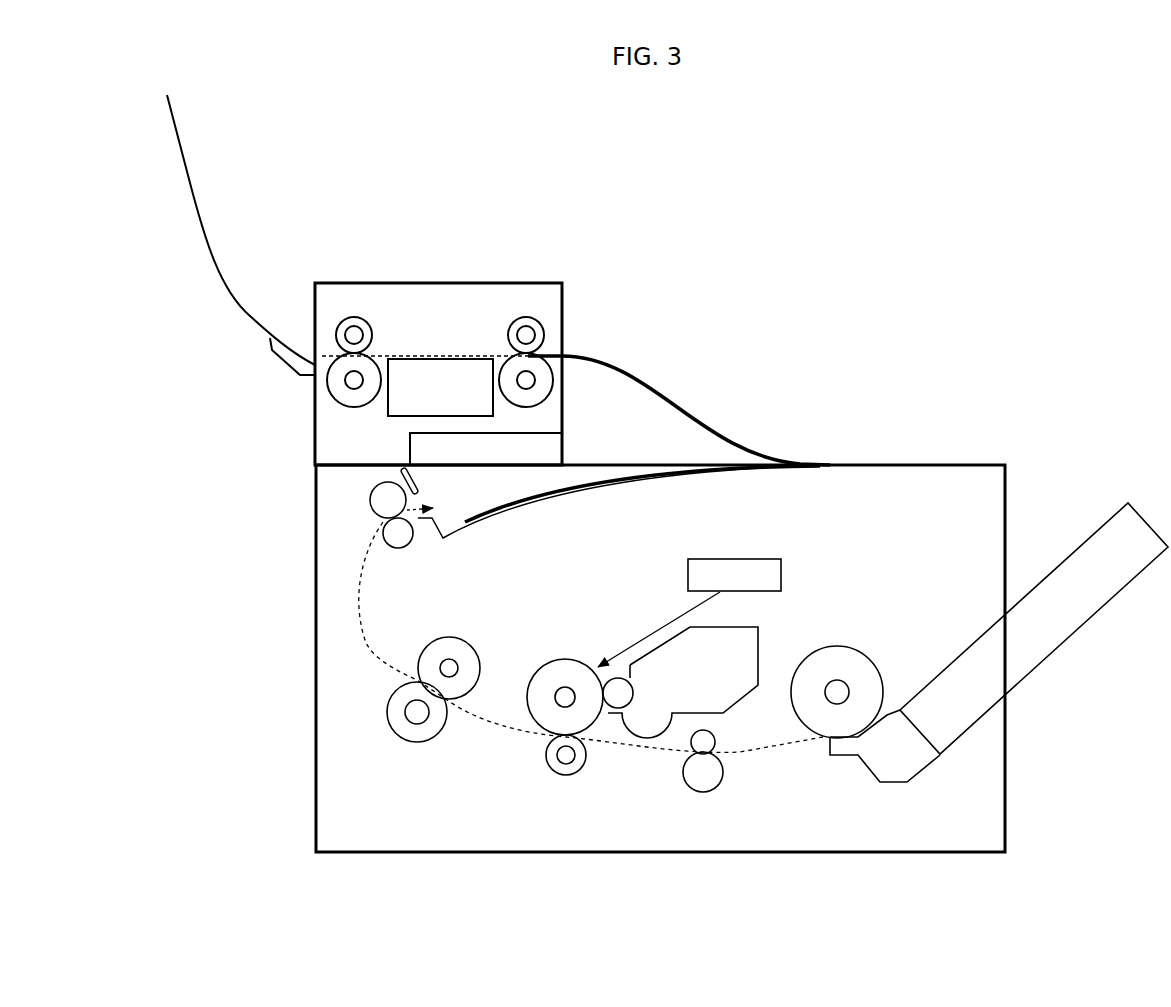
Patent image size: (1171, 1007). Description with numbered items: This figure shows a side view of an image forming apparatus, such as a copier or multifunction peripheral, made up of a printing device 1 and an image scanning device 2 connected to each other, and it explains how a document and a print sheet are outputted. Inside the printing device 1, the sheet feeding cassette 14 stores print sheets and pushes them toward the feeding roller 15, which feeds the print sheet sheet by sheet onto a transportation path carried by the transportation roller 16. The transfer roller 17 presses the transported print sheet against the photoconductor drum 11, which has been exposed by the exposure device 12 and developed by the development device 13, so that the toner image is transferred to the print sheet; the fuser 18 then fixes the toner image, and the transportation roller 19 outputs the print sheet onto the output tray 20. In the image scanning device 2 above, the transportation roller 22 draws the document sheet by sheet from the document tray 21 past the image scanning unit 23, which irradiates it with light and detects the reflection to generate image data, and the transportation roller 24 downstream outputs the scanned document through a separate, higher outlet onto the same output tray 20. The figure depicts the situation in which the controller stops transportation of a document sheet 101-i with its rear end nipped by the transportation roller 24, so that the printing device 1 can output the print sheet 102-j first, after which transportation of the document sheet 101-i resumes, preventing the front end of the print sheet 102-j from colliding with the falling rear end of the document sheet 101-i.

The printing device 1 is at (302, 558).
The image scanning device 2 is at (372, 274).
The photoconductor drum 11 is at (541, 660).
The exposure device 12 is at (760, 559).
The development device 13 is at (760, 645).
The sheet feeding cassette 14 is at (1148, 530).
The feeding roller 15 is at (862, 653).
The transportation roller 16 is at (693, 793).
The transfer roller 17 is at (562, 776).
The fuser 18 is at (468, 633).
The transportation roller 19 is at (397, 548).
The output tray 20 is at (840, 437).
The document tray 21 is at (241, 312).
The transportation roller 22 is at (372, 333).
The image scanning unit 23 is at (398, 417).
The transportation roller 24 is at (510, 333).
The document sheet 101-i is at (640, 380).
The print sheet 102-j is at (508, 502).